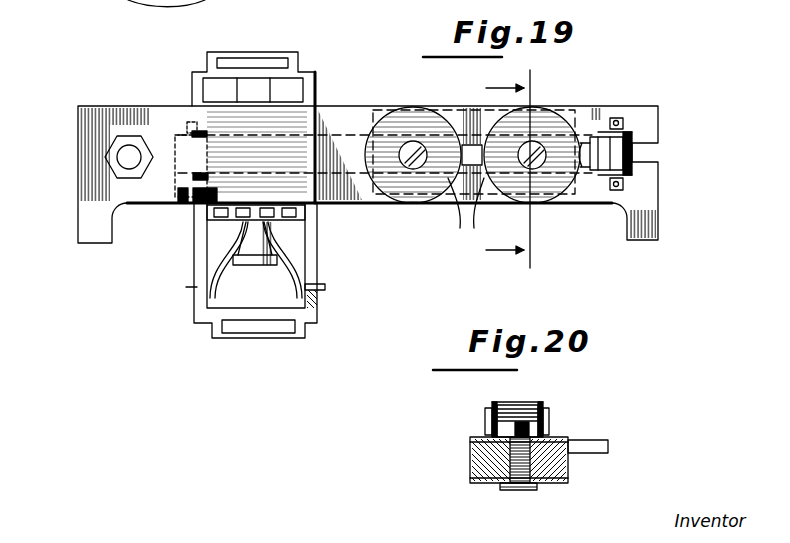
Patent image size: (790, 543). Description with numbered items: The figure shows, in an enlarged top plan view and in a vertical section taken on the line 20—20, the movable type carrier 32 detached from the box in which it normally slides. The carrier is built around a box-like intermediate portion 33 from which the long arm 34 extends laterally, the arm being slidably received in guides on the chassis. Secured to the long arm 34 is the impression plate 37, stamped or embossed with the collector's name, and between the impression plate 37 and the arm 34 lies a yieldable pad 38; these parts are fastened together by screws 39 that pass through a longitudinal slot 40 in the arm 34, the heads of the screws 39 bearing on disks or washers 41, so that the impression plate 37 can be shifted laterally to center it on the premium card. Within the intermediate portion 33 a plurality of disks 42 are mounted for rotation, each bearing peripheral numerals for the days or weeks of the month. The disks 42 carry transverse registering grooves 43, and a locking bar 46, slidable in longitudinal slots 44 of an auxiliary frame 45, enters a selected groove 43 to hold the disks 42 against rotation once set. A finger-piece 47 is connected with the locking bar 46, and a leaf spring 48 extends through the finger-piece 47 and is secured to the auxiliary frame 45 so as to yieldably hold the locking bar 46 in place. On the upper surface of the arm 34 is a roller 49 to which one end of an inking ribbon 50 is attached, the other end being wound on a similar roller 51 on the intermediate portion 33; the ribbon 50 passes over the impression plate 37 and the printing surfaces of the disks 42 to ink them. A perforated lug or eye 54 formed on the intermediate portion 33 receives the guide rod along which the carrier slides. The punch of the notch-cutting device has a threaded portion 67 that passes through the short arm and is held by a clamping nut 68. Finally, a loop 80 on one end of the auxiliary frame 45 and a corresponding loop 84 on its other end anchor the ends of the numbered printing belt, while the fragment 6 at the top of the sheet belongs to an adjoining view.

In FIG. 19, the adjacent figure fragment 6 is at (90, 8).
In FIG. 19, the section line 20- 20 is at (514, 172).
In FIG. 19, the movable type carrier 32 is at (349, 103).
In FIG. 19, the box-like intermediate portion 33 is at (235, 125).
In FIG. 19, the long arm 34 is at (330, 106).
In FIG. 20, the long arm 34 is at (590, 446).
In FIG. 20, the impression plate 37 is at (560, 488).
In FIG. 20, the yieldable pad 38 is at (570, 462).
In FIG. 19, the screws 39 is at (515, 152).
In FIG. 20, the screws 39 is at (482, 437).
In FIG. 19, the longitudinal slot 40 is at (640, 150).
In FIG. 19, the disks or washers 41 is at (466, 197).
In FIG. 19, the disks 42 is at (245, 203).
In FIG. 19, the registering grooves 43 is at (250, 80).
In FIG. 19, the longitudinal slots 44 is at (326, 287).
In FIG. 19, the auxiliary frame 45 is at (197, 252).
In FIG. 19, the locking bar 46 is at (312, 214).
In FIG. 19, the finger-piece 47 is at (266, 266).
In FIG. 19, the leaf spring 48 is at (292, 258).
In FIG. 19, the roller 49 is at (632, 160).
In FIG. 20, the roller 49 is at (520, 420).
In FIG. 20, the inking ribbon 50 is at (505, 406).
In FIG. 19, the roller 51 is at (165, 210).
In FIG. 19, the perforated lug or eye 54 is at (190, 210).
In FIG. 19, the threaded portion 67 is at (130, 150).
In FIG. 19, the clamping nut 68 is at (117, 158).
In FIG. 19, the loop 80 is at (275, 325).
In FIG. 19, the loop 84 is at (262, 62).